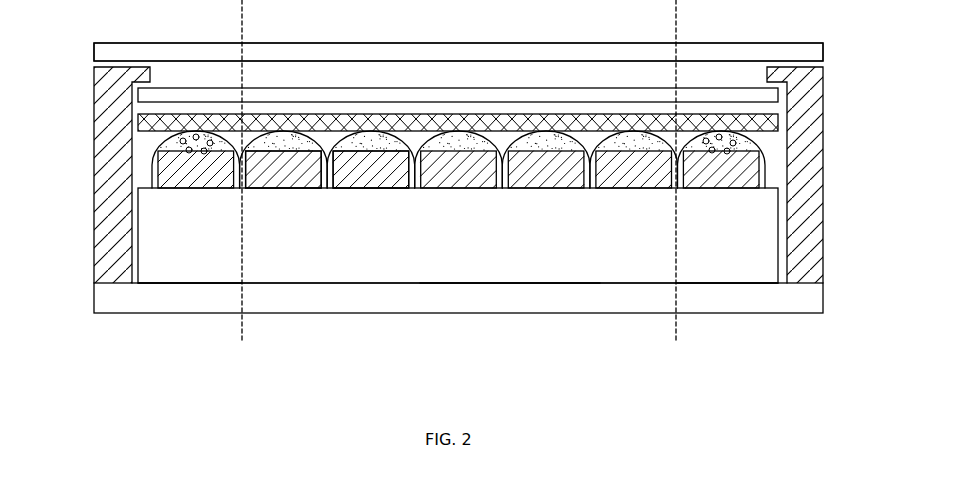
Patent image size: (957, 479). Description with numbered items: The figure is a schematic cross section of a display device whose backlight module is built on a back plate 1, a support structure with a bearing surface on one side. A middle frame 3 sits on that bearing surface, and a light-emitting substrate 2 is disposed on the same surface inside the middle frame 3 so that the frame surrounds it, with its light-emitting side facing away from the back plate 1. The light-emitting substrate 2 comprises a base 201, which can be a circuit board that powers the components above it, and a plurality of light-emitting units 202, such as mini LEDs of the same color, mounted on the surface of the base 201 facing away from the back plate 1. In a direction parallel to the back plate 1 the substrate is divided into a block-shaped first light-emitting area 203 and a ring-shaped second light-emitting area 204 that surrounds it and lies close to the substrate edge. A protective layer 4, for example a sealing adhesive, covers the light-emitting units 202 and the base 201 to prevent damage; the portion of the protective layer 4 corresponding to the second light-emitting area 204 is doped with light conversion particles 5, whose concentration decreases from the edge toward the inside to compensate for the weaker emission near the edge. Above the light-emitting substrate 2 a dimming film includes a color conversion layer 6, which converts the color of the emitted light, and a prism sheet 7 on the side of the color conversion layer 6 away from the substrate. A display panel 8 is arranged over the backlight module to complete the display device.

The back plate 1 is at (587, 300).
The light-emitting substrate 2 is at (375, 352).
The middle frame 3 is at (823, 168).
The protective layer 4 is at (415, 190).
The light conversion particle 5 is at (185, 152).
The color conversion layer 6 is at (140, 120).
The prism sheet 7 is at (778, 100).
The display panel 8 is at (823, 45).
The base 201 is at (385, 250).
The light-emitting unit 202 is at (270, 180).
The first light-emitting area 203 is at (523, 286).
The second light-emitting area 204 is at (166, 286).